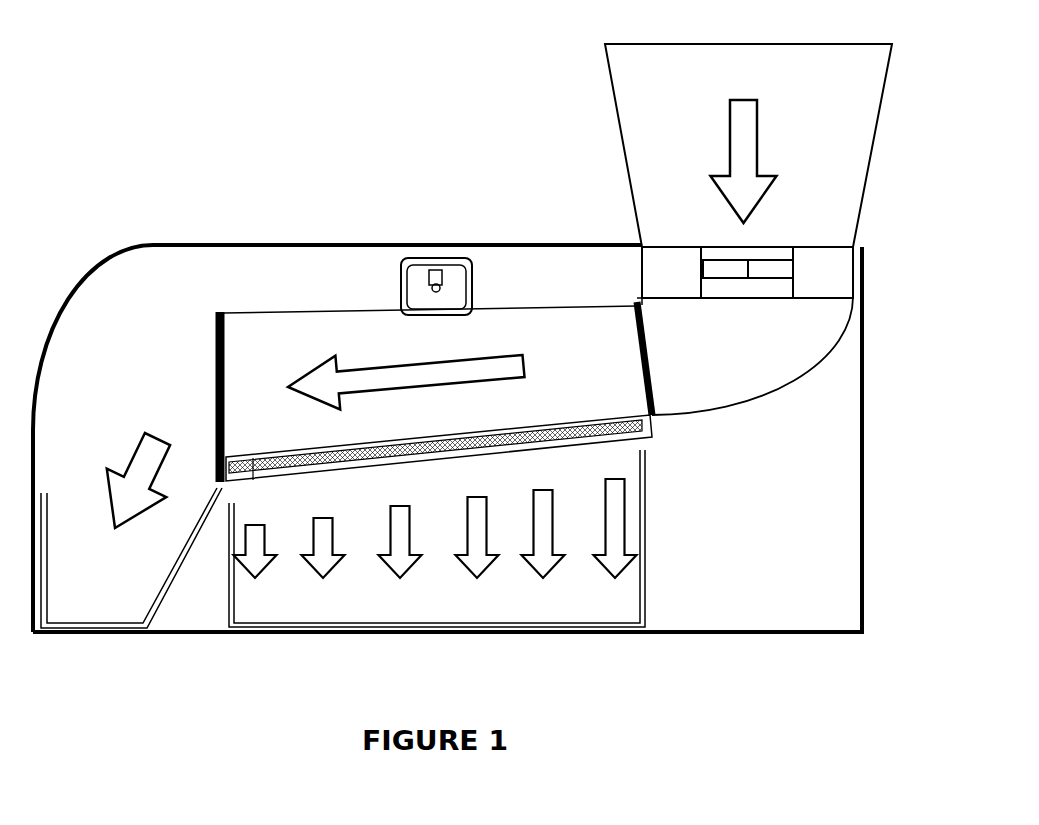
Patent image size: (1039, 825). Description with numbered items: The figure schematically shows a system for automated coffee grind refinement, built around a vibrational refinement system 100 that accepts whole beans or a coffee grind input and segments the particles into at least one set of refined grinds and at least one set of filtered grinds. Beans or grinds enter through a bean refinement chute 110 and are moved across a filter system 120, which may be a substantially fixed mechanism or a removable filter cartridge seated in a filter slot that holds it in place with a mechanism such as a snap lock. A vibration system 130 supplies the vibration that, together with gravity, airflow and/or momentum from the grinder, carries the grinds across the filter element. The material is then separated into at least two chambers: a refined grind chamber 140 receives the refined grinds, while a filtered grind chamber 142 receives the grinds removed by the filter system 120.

The vibrational refinement system 100 is at (240, 214).
The bean refinement chute 110 is at (238, 387).
The filter system 120 is at (615, 432).
The vibration system 130 is at (438, 252).
The refined grind chamber 140 is at (90, 623).
The filtered grind chamber 142 is at (558, 622).